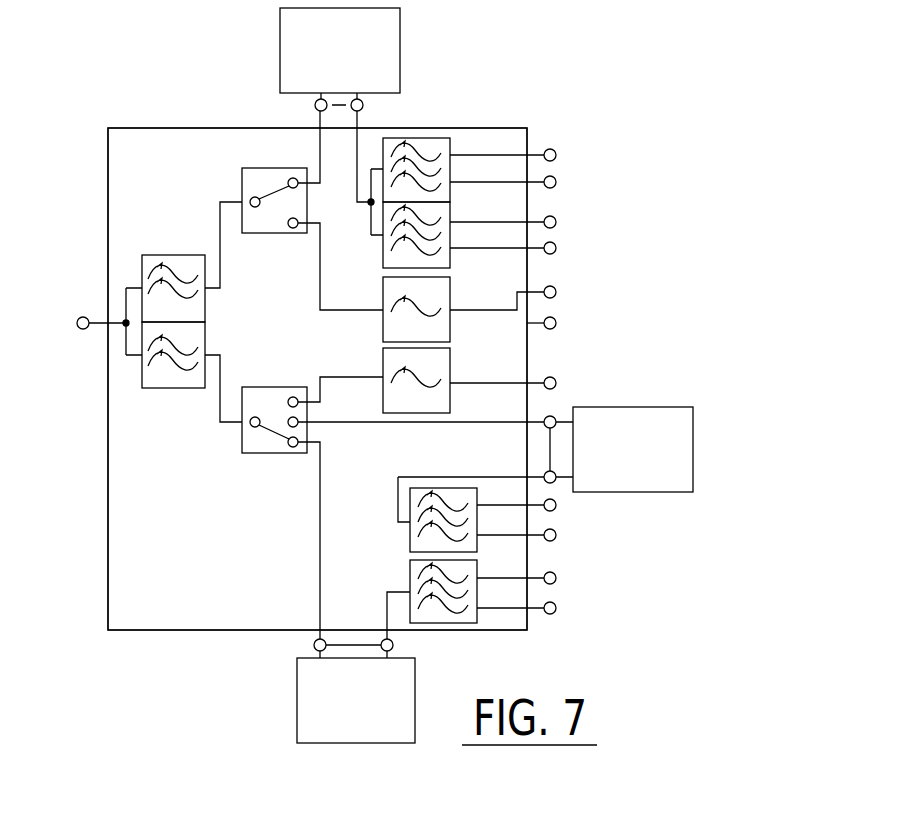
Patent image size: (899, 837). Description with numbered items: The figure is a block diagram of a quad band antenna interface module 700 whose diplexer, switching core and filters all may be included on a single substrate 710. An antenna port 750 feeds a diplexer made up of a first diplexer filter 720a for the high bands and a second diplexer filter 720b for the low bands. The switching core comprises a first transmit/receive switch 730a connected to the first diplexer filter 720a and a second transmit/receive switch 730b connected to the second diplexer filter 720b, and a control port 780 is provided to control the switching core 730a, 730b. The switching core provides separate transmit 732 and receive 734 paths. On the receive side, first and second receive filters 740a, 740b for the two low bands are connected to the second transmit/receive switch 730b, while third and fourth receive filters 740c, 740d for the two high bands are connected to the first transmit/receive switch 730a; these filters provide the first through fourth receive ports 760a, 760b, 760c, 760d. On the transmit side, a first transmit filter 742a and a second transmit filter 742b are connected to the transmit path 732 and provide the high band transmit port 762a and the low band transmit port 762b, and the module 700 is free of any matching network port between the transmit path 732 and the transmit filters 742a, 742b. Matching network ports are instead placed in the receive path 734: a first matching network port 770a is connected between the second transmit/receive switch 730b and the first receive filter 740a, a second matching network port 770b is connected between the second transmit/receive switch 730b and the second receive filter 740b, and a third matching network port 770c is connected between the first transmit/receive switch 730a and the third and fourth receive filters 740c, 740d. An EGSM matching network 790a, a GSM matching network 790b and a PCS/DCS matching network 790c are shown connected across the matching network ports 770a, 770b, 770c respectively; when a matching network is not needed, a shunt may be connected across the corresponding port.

The antenna interface module 700 is at (129, 108).
The single substrate 710 is at (157, 164).
The first diplexer filter 720a is at (178, 255).
The second diplexer filter 720b is at (178, 388).
The first transmit/receive switch 730a is at (242, 187).
The second transmit/receive switch 730b is at (242, 437).
The transmit path 732 is at (320, 293).
The receive path 734 is at (320, 158).
The first receive filter 740a is at (455, 625).
The second receive filter 740b is at (408, 548).
The third receive filter 740c is at (452, 262).
The fourth receive filter 740d is at (452, 196).
The first transmit filter 742a is at (452, 326).
The second transmit filter 742b is at (452, 396).
The antenna port 750 is at (80, 316).
The first receive port 760a is at (538, 618).
The second receive port 760b is at (540, 540).
The third receive port 760c is at (543, 219).
The fourth receive port 760d is at (541, 152).
The first transmit port 762a is at (543, 288).
The second transmit port 762b is at (454, 383).
The first matching network port 770a is at (315, 637).
The second matching network port 770b is at (325, 424).
The third matching network port 770c is at (320, 120).
The control port 780 is at (533, 328).
The EGSM matching network 790a is at (295, 695).
The GSM matching network 790b is at (695, 448).
The PCS/DCS matching network 790c is at (281, 44).